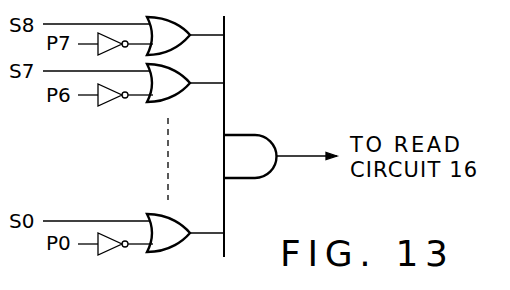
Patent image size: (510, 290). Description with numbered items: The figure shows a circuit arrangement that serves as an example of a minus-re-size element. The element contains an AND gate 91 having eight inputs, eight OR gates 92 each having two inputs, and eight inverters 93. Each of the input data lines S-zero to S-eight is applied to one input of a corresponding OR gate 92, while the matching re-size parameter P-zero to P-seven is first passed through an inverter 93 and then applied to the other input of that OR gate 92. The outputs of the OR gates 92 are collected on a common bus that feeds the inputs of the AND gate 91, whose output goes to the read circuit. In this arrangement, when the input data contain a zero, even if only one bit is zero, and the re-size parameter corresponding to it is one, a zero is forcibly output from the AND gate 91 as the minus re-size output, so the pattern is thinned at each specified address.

The AND gate 91 is at (253, 134).
The OR gate 92 is at (175, 17).
The inverter 93 is at (111, 106).